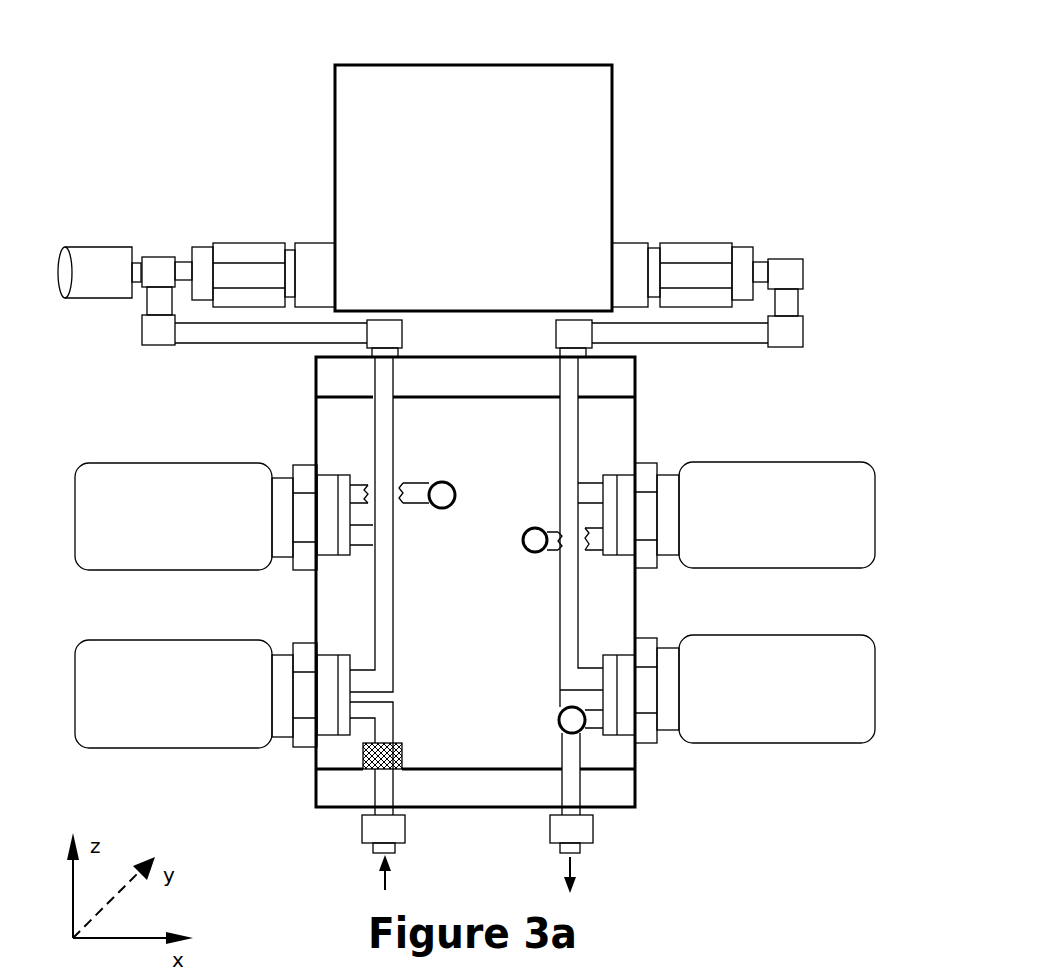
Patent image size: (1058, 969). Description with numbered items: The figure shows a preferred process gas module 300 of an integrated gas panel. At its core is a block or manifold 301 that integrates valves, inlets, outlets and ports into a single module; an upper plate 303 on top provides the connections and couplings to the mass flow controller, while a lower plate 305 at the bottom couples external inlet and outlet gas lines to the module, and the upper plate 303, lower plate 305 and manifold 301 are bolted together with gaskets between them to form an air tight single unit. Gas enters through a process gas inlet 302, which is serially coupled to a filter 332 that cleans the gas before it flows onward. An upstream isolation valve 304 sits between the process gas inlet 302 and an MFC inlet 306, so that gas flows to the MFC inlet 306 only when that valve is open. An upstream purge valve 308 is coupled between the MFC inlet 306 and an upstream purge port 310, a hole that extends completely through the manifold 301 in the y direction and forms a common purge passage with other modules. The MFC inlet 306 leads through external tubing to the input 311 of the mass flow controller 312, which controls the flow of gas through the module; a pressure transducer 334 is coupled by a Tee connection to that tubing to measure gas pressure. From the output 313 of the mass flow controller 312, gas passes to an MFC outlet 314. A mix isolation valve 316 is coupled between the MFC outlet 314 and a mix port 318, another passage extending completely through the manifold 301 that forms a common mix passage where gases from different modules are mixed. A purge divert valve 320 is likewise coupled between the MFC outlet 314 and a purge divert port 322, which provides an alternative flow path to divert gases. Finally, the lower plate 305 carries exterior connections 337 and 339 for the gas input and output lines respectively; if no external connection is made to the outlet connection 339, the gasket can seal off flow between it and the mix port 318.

The process gas module 300 is at (233, 60).
The manifold 301 is at (648, 611).
The process gas inlet 302 is at (387, 725).
The upper plate 303 is at (320, 373).
The upstream isolation valve 304 is at (212, 694).
The lower plate 305 is at (330, 783).
The MFC inlet 306 is at (387, 620).
The upstream purge valve 308 is at (224, 516).
The upstream purge port 310 is at (446, 487).
The input of mass flow controller 311 is at (308, 266).
The mass flow controller 312 is at (473, 188).
The output of mass flow controller 313 is at (640, 266).
The MFC outlet 314 is at (568, 456).
The mix isolation valve 316 is at (739, 689).
The mix port 318 is at (572, 720).
The purge divert valve 320 is at (726, 515).
The purge divert port 322 is at (534, 545).
The filter 332 is at (402, 755).
The pressure transducer 334 is at (105, 262).
The exterior inlet connection 337 is at (362, 827).
The exterior outlet connection 339 is at (583, 830).